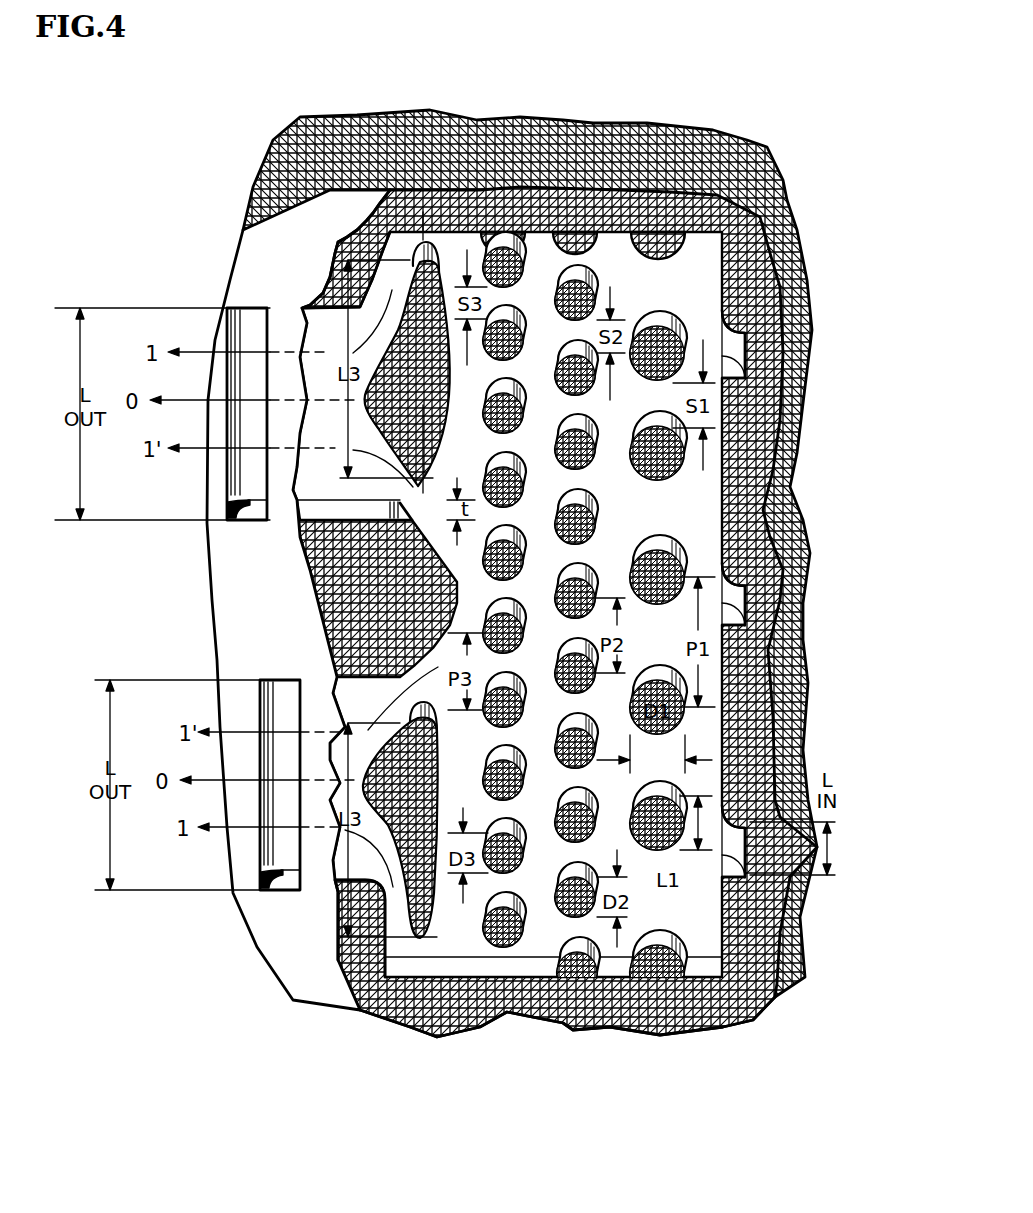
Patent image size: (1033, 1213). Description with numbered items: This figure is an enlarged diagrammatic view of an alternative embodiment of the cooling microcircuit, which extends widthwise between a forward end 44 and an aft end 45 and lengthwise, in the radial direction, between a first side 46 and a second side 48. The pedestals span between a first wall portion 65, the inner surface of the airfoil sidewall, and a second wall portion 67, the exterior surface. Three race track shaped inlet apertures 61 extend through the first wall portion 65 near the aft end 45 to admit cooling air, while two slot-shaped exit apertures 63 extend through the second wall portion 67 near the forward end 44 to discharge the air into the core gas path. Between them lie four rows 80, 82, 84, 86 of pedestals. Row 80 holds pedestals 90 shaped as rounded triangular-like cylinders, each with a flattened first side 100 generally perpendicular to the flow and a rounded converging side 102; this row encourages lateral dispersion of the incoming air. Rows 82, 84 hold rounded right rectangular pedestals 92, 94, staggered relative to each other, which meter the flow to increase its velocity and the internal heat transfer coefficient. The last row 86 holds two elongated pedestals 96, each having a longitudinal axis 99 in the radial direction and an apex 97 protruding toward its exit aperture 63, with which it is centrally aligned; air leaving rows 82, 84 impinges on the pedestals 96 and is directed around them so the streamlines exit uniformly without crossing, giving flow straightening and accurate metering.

The forward end 44 is at (372, 245).
The aft end 45 is at (705, 257).
The first side 46 is at (458, 250).
The second side 48 is at (700, 985).
The inlet aperture 61 is at (740, 331).
The exit aperture 63 is at (250, 472).
The first wall portion 65 is at (320, 115).
The second wall portion 67 is at (265, 258).
The row of pedestals 80 is at (660, 985).
The row of pedestals 82 is at (572, 985).
The row of pedestals 84 is at (503, 977).
The row of pedestals 86 is at (420, 977).
The pedestal 90 is at (645, 800).
The pedestal 92 is at (568, 870).
The pedestal 94 is at (483, 924).
The pedestal 96 is at (428, 400).
The apex 97 is at (364, 403).
The longitudinal axis 99 is at (326, 304).
The first side 100 is at (683, 462).
The converging side 102 is at (616, 462).